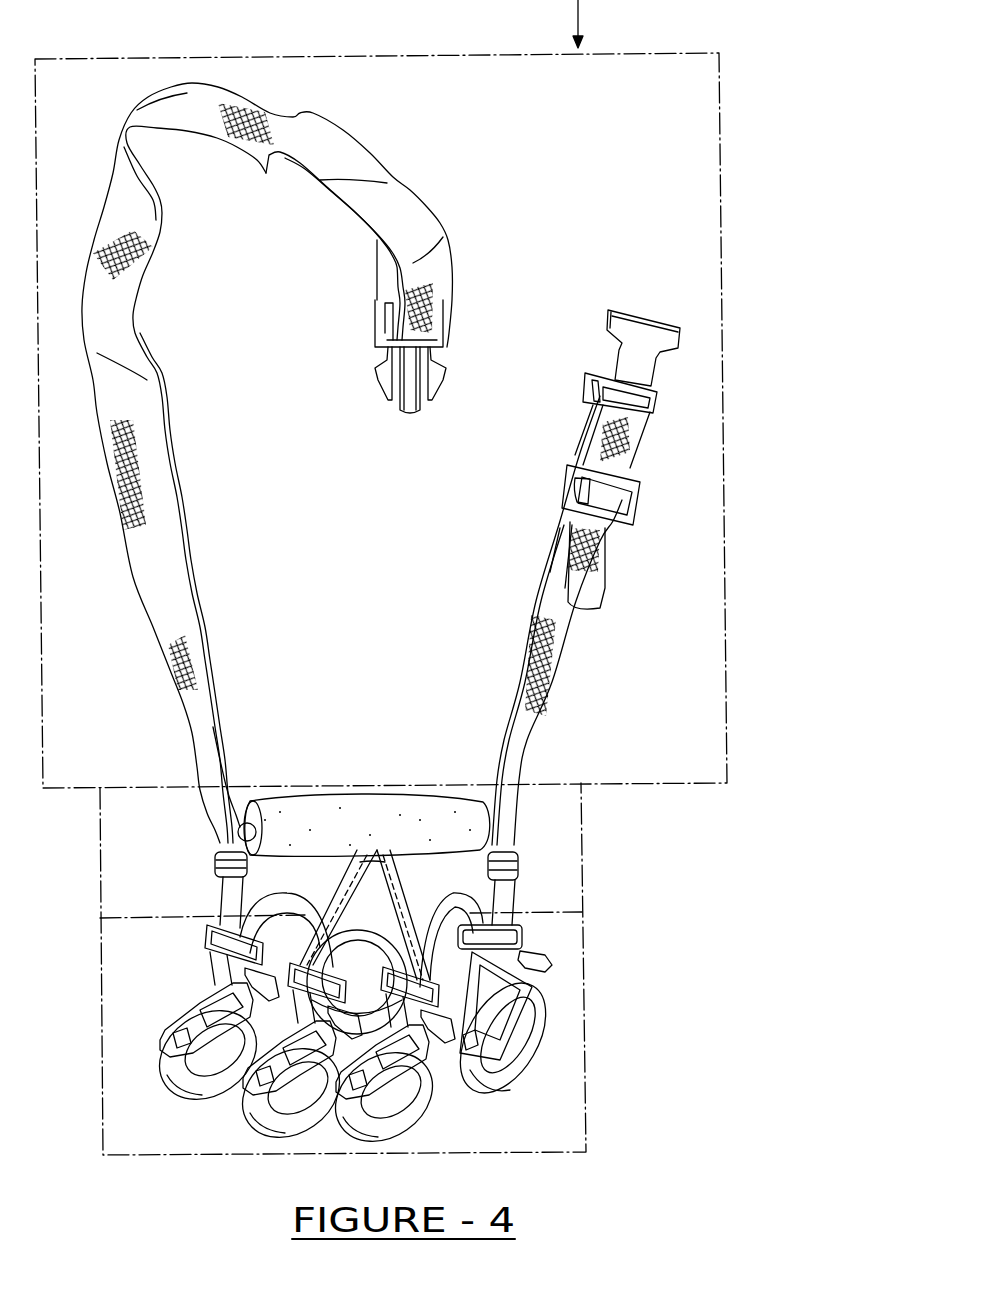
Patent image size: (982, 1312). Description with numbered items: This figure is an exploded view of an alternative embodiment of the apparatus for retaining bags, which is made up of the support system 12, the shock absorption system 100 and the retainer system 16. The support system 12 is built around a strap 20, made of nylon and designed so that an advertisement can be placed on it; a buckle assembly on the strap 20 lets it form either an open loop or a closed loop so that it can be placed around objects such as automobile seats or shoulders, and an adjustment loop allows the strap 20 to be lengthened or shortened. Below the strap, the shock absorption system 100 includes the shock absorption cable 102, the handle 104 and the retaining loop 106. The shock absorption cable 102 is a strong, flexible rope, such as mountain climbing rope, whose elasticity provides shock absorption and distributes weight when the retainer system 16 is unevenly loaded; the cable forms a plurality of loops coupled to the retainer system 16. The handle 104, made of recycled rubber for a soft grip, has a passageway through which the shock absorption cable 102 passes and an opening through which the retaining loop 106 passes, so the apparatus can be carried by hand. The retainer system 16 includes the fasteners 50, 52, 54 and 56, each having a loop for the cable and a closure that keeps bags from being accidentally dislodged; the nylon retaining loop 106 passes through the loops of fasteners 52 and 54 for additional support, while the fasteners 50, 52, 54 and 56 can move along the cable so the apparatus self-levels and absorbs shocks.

The support system 12 is at (694, 568).
The retainer system 16 is at (562, 1053).
The strap 20 is at (172, 580).
The fastener 50 is at (545, 1020).
The fastener 52 is at (430, 1090).
The fastener 54 is at (263, 1117).
The fastener 56 is at (177, 1080).
The shock absorption system 100 is at (560, 838).
The shock absorption cable 102 is at (507, 906).
The handle 104 is at (428, 803).
The retaining loop 106 is at (390, 892).